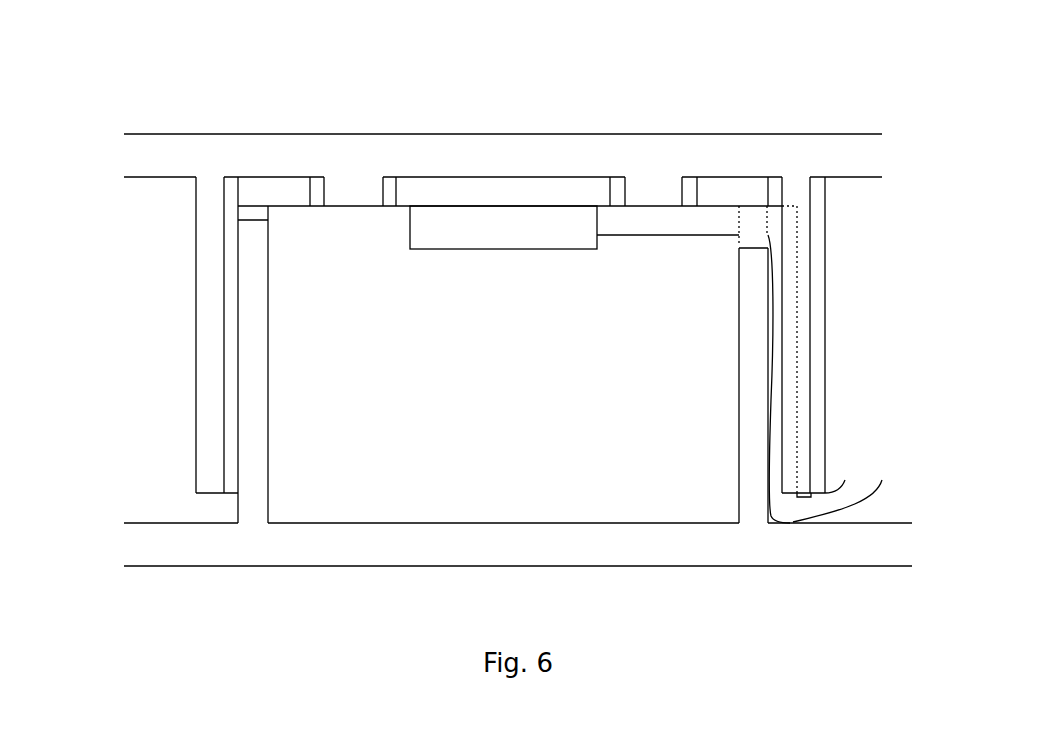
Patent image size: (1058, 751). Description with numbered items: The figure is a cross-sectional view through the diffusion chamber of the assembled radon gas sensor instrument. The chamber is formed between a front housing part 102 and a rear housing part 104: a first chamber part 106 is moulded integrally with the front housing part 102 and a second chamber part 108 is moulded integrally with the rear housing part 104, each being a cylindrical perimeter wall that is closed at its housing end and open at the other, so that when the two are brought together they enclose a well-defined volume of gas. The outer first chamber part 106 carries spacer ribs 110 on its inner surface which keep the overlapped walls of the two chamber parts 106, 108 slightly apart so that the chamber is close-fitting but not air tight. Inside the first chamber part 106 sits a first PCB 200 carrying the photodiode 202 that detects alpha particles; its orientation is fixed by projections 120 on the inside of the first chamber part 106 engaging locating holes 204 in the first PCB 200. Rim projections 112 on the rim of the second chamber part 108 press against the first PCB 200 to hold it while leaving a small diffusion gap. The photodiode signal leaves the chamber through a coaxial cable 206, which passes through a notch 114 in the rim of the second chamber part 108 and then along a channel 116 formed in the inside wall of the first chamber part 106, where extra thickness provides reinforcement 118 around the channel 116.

The front housing part 102 is at (152, 152).
The rear housing part 104 is at (309, 550).
The first chamber part 106 is at (208, 385).
The second chamber part 108 is at (255, 460).
The spacer ribs 110 is at (230, 474).
The rim projections 112 is at (247, 213).
The notch 114 is at (747, 240).
The channel 116 is at (797, 223).
The reinforcement 118 is at (818, 342).
The projections 120 is at (343, 187).
The first PCB 200 is at (295, 193).
The photodiode 202 is at (508, 232).
The locating holes 204 is at (695, 195).
The coaxial cable 206 is at (625, 225).